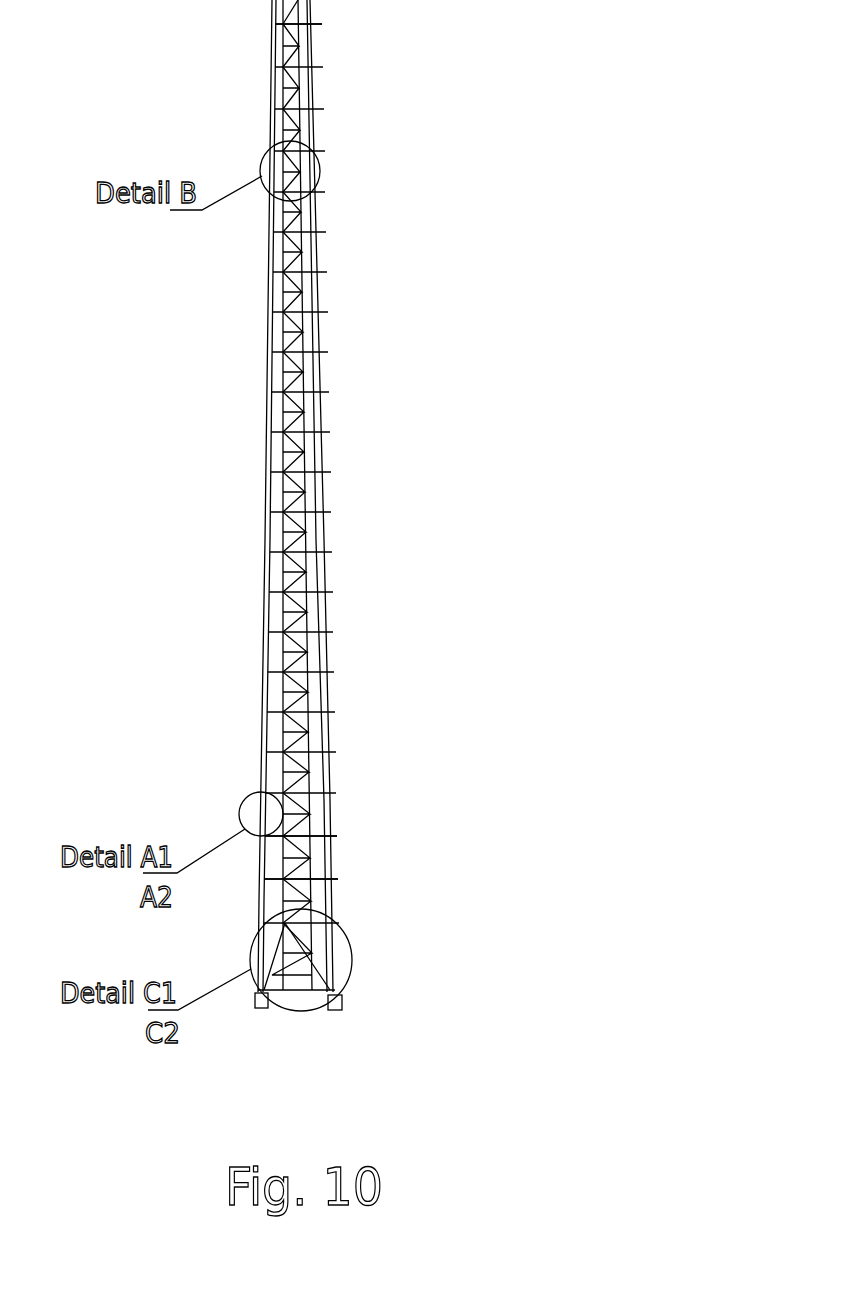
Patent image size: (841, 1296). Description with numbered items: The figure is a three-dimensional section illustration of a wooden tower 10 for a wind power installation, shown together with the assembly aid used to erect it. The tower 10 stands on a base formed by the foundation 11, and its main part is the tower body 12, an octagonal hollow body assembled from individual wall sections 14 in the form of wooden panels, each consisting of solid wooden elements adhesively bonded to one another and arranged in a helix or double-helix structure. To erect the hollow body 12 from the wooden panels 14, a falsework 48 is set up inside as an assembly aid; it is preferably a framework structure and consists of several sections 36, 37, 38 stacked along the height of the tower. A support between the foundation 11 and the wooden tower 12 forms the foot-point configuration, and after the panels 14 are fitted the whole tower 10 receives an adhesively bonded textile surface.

The tower 10 is at (276, 557).
The foundation 11 is at (345, 1016).
The tower body 12 is at (212, 617).
The wall section 14 is at (336, 1012).
The falsework section 36 is at (410, 985).
The falsework section 37 is at (418, 875).
The falsework section 38 is at (413, 47).
The falsework 48 is at (282, 485).